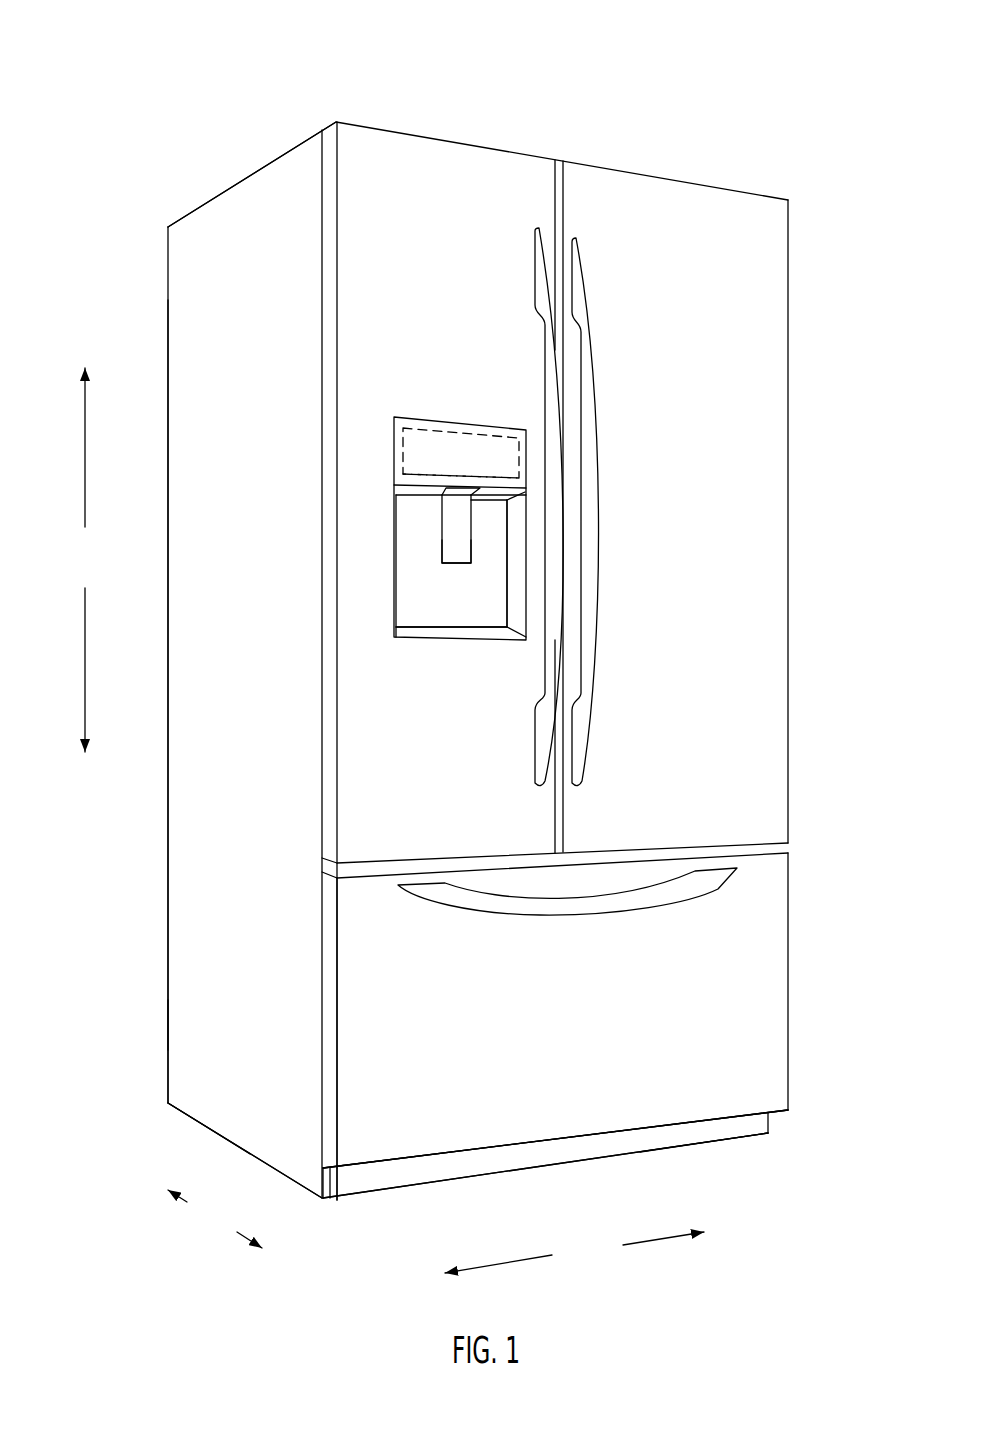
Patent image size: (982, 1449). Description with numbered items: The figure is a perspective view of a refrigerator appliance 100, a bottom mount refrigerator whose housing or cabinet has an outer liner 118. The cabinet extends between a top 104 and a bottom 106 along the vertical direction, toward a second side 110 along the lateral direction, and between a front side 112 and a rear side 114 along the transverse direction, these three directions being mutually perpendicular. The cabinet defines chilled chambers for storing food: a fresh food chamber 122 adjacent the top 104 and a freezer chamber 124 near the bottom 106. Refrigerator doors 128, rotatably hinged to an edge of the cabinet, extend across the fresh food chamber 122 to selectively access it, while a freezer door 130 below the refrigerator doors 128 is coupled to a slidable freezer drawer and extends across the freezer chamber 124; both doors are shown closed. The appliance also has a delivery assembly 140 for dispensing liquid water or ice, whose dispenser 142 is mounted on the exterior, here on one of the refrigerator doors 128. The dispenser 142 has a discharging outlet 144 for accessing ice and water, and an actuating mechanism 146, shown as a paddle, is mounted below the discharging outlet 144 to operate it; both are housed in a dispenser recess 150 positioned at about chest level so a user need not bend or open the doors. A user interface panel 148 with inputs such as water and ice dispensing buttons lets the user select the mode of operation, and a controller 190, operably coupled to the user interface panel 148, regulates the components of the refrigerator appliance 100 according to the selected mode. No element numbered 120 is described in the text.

The refrigerator appliance 100 is at (722, 99).
The top 104 is at (160, 226).
The bottom 106 is at (142, 1098).
The second side 110 is at (784, 1145).
The front side 112 is at (315, 1210).
The rear side 114 is at (162, 1112).
The outer liner 118 is at (200, 765).
The cabinet 120 is at (250, 193).
The fresh food chamber 122 is at (802, 200).
The freezer chamber 124 is at (802, 855).
The refrigerator doors 128 is at (423, 253).
The freezer door 130 is at (553, 1023).
The delivery assembly 140 is at (428, 434).
The dispenser 142 is at (393, 582).
The discharging outlet 144 is at (448, 507).
The actuating mechanism 146 is at (457, 548).
The user interface panel 148 is at (500, 450).
The dispenser recess 150 is at (474, 612).
The controller 190 is at (527, 478).